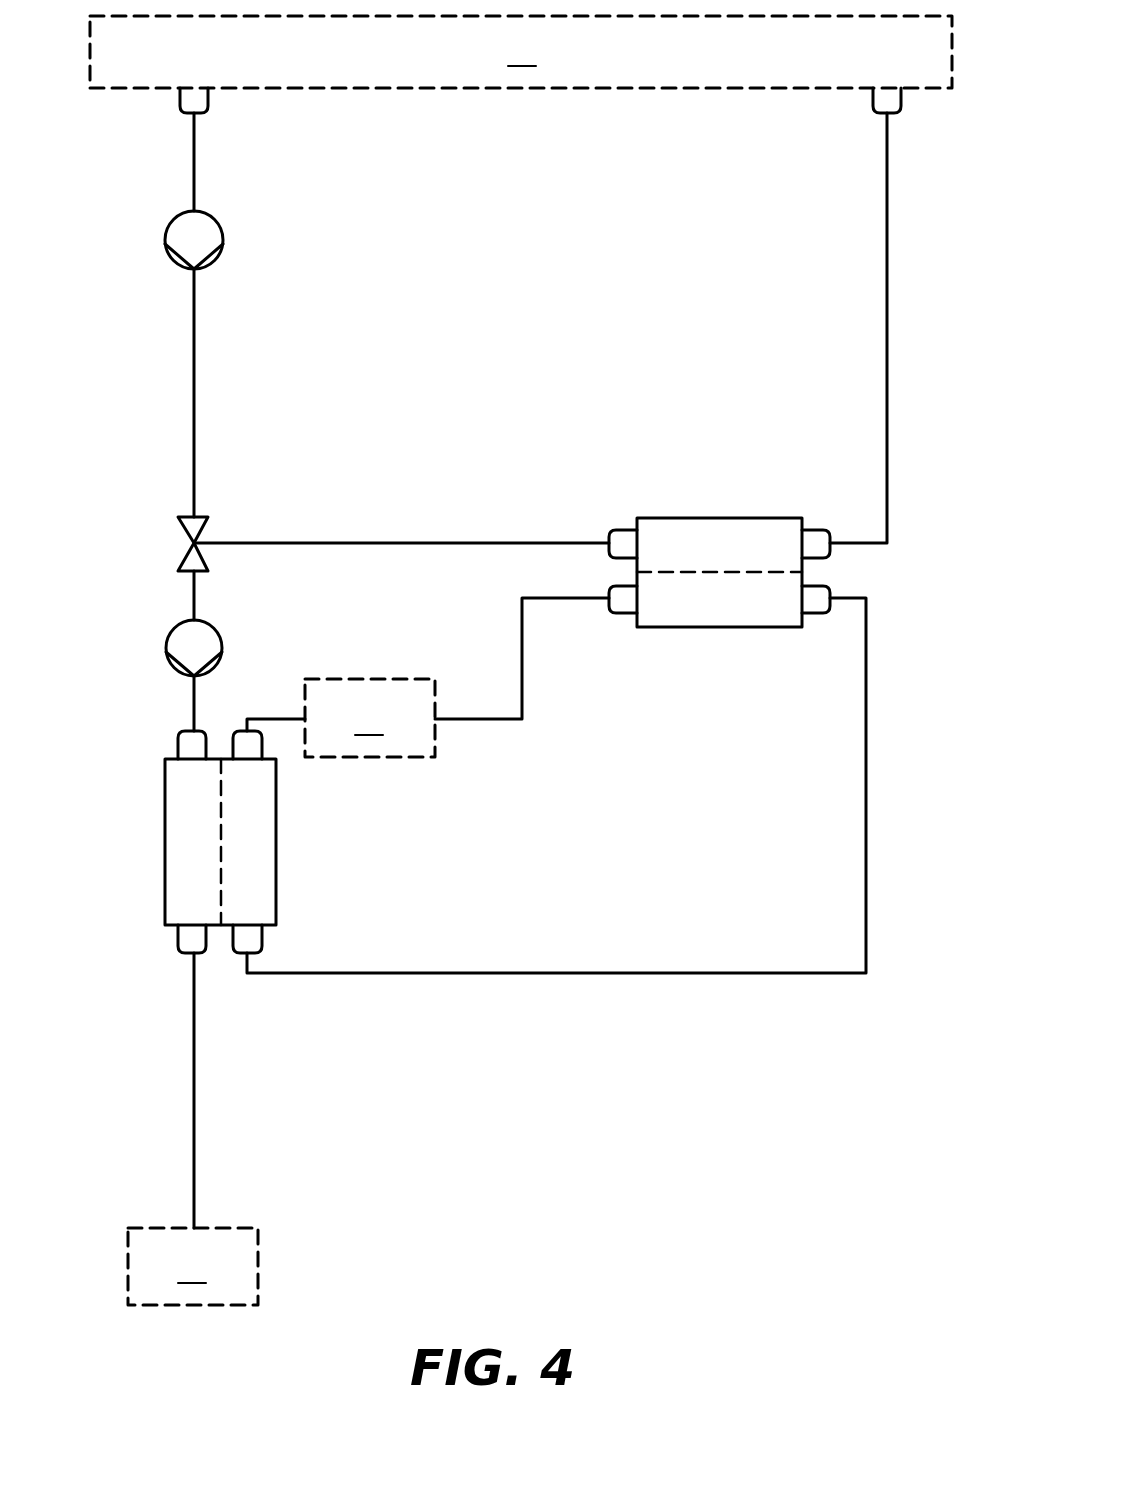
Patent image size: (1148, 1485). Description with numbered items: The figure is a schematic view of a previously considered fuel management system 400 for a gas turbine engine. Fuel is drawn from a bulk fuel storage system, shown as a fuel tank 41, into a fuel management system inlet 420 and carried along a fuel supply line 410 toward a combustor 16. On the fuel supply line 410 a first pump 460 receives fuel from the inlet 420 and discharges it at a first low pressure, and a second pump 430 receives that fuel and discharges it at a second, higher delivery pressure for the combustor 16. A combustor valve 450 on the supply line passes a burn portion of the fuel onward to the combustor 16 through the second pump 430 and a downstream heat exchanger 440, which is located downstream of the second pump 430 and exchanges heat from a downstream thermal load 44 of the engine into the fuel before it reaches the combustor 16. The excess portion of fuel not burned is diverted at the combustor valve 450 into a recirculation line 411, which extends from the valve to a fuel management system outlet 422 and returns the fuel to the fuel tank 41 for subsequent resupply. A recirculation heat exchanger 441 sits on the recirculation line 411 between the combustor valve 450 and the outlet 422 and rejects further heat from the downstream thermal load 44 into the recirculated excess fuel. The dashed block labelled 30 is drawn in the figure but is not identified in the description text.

The fuel tank 41 is at (521, 52).
The combustor 16 is at (193, 1266).
The electronic component 30 is at (370, 718).
The downstream thermal load 44 is at (413, 666).
The fuel management system 400 is at (884, 1287).
The fuel supply line 410 is at (194, 355).
The recirculation line 411 is at (887, 285).
The fuel management system inlet 420 is at (188, 100).
The fuel management system outlet 422 is at (885, 102).
The second pump 430 is at (168, 652).
The downstream heat exchanger 440 is at (165, 835).
The recirculation heat exchanger 441 is at (687, 628).
The combustor valve 450 is at (200, 517).
The first pump 460 is at (223, 230).